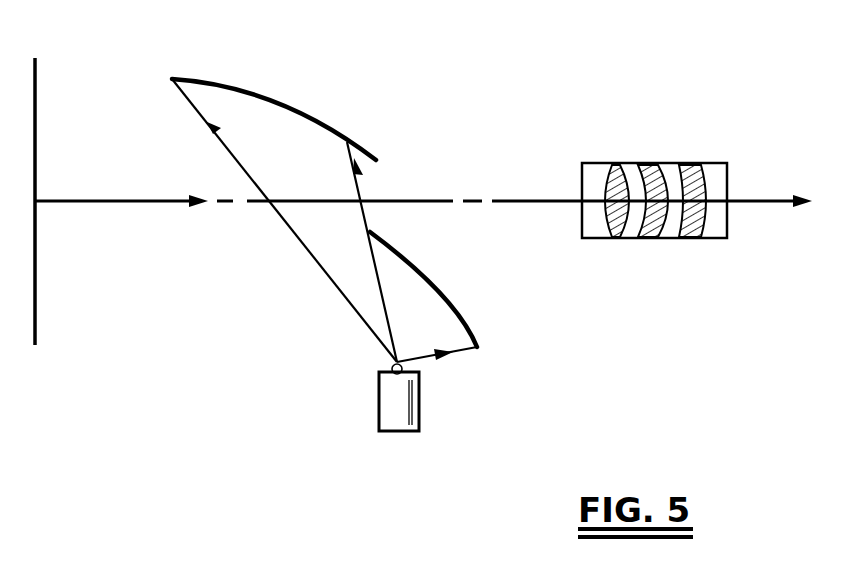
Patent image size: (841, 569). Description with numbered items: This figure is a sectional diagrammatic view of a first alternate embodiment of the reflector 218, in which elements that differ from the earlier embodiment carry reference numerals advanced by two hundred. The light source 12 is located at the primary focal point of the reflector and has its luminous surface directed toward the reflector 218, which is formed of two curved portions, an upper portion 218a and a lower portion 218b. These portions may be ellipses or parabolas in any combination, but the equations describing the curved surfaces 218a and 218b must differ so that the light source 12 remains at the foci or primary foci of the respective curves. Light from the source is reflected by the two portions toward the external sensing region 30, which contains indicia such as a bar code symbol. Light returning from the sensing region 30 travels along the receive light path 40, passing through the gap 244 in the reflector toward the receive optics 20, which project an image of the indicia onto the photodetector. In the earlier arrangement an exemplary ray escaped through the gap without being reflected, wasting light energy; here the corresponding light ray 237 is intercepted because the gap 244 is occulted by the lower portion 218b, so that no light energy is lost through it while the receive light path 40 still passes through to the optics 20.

The light source 12 is at (379, 405).
The receive optics 20 is at (635, 163).
The sensing region 30 is at (47, 189).
The receive light path 40 is at (100, 200).
The reflector 218 is at (365, 189).
The upper portion of reflector 218a is at (265, 92).
The lower portion of reflector 218b is at (451, 305).
The light ray 237 is at (357, 187).
The gap 244 is at (373, 212).